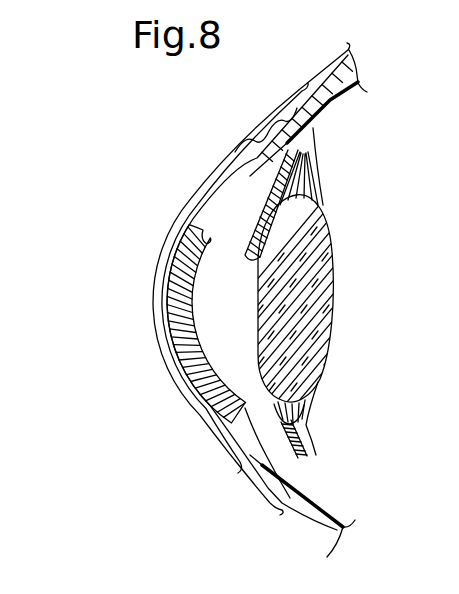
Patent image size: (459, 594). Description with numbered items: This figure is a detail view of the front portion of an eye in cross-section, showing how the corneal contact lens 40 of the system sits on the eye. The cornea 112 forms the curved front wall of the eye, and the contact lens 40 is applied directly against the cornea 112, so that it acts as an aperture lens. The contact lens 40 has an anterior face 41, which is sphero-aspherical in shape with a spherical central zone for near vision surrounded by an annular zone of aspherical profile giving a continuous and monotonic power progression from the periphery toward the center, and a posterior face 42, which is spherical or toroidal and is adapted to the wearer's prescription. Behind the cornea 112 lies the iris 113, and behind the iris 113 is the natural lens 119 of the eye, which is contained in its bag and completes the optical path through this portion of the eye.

The contact lens 40 is at (158, 357).
The anterior face 41 is at (148, 307).
The posterior face 42 is at (208, 229).
The cornea 112 is at (185, 268).
The iris 113 is at (210, 415).
The natural lens 119 is at (324, 233).